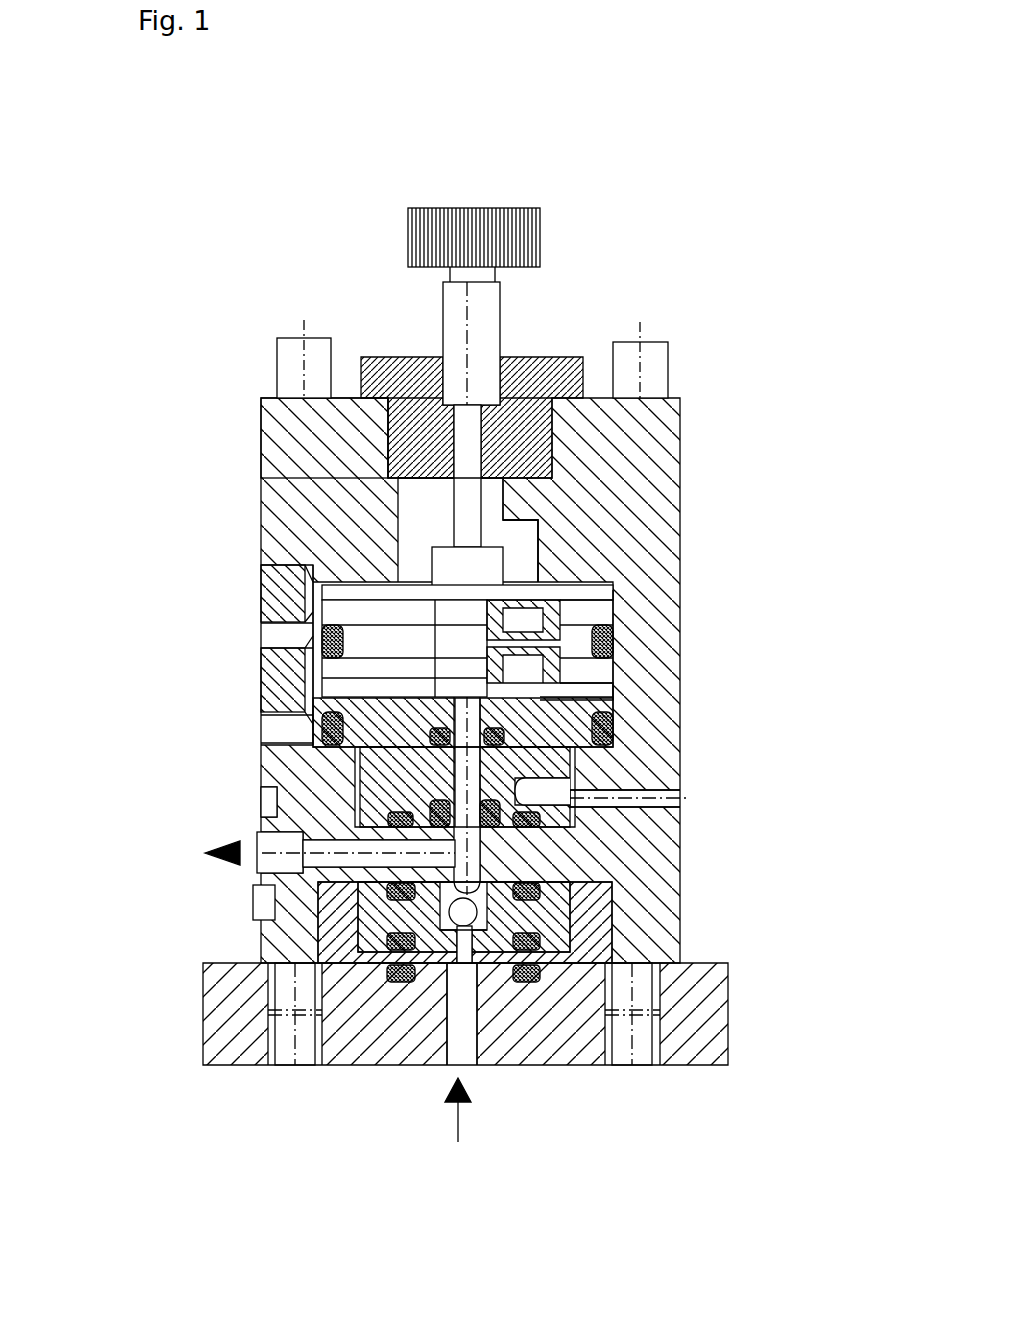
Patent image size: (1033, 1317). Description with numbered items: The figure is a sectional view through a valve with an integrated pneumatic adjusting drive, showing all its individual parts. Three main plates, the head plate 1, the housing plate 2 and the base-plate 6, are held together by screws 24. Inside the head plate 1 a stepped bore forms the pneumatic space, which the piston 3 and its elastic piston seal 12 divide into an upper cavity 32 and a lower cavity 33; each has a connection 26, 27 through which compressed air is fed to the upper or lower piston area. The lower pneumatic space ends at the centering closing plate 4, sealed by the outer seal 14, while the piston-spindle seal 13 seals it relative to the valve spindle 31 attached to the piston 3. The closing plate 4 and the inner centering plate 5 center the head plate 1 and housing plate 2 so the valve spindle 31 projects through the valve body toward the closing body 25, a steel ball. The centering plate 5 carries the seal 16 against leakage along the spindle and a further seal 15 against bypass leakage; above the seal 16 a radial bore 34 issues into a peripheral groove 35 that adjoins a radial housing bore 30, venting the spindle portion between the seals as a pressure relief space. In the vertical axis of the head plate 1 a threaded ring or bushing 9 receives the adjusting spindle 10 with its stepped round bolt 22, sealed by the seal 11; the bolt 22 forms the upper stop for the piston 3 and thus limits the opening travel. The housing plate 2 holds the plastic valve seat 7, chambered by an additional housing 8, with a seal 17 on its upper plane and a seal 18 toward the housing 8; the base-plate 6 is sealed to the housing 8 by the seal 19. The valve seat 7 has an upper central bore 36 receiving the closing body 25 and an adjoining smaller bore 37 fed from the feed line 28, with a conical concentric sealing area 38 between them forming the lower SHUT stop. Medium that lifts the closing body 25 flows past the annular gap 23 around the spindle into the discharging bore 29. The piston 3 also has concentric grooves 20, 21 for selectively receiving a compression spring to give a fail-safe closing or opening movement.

The head plate 1 is at (283, 420).
The housing plate 2 is at (292, 814).
The piston 3 is at (360, 615).
The closing plate 4 is at (378, 714).
The centering plate 5 is at (395, 763).
The base-plate 6 is at (225, 987).
The valve seat 7 is at (335, 920).
The housing 8 is at (336, 931).
The threaded ring or bushing 9 is at (372, 353).
The adjusting spindle 10 is at (468, 325).
The seal 11 is at (548, 357).
The piston seal 12 is at (527, 670).
The piston-spindle seal 13 is at (503, 728).
The outer seal 14 is at (265, 725).
The seal 15 is at (545, 820).
The seal 16 is at (492, 866).
The seal 17 is at (488, 888).
The seal 18 is at (390, 975).
The seal 19 is at (432, 940).
The concentric groove 20 is at (520, 617).
The concentric groove 21 is at (588, 690).
The stepped round bolt 22 is at (435, 502).
The annular gap 23 is at (486, 858).
The screws 24 is at (287, 365).
The closing body 25 is at (438, 972).
The connection 26 is at (272, 593).
The connection 27 is at (267, 687).
The feed line 28 is at (462, 1050).
The discharging bore 29 is at (262, 866).
The radial housing bore 30 is at (678, 801).
The valve spindle 31 is at (240, 1062).
The upper cavity 32 is at (518, 560).
The lower cavity 33 is at (600, 686).
The radial bore 34 is at (537, 788).
The peripheral groove 35 is at (263, 795).
The upper central bore 36 is at (580, 932).
The smaller bore 37 is at (470, 922).
The conical concentric sealing area 38 is at (483, 925).